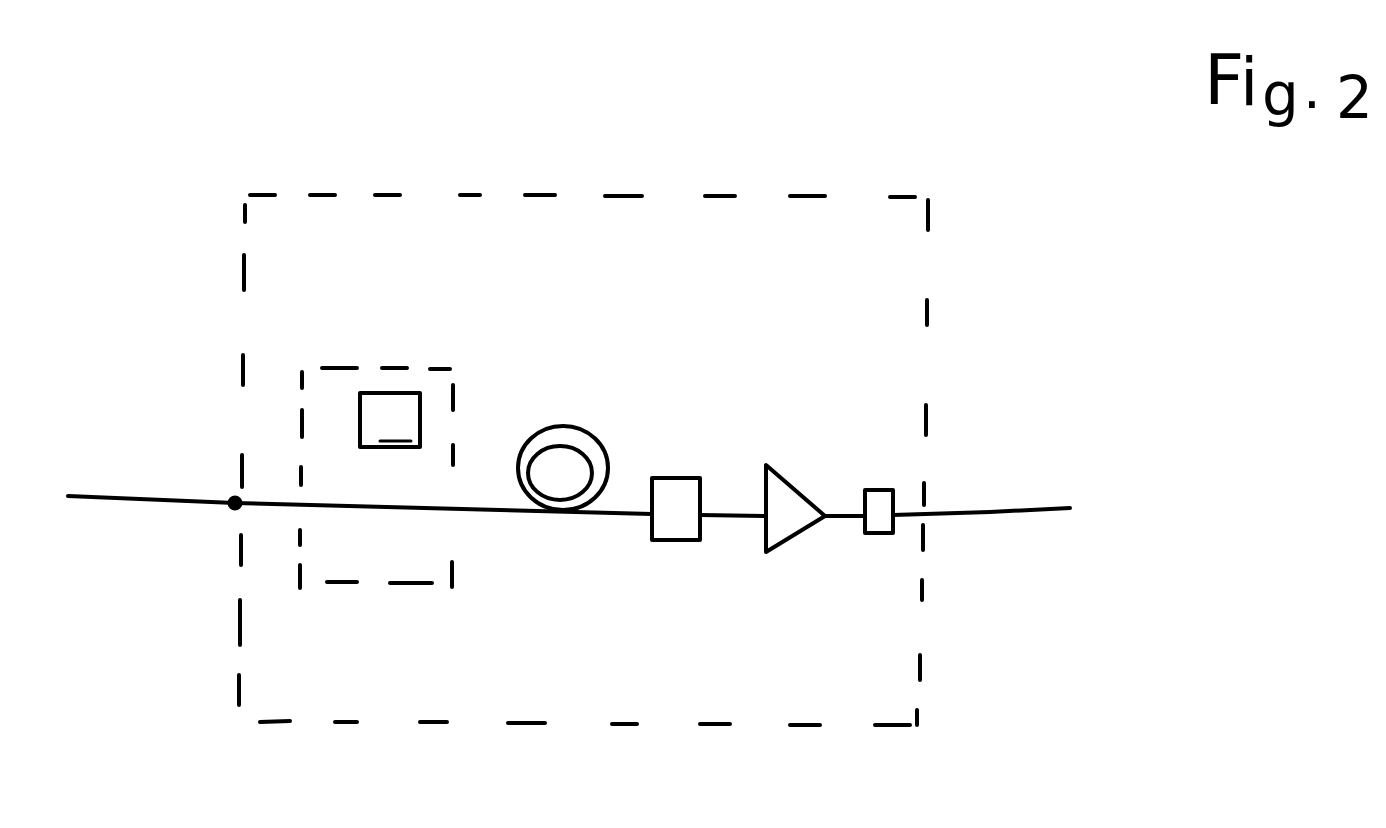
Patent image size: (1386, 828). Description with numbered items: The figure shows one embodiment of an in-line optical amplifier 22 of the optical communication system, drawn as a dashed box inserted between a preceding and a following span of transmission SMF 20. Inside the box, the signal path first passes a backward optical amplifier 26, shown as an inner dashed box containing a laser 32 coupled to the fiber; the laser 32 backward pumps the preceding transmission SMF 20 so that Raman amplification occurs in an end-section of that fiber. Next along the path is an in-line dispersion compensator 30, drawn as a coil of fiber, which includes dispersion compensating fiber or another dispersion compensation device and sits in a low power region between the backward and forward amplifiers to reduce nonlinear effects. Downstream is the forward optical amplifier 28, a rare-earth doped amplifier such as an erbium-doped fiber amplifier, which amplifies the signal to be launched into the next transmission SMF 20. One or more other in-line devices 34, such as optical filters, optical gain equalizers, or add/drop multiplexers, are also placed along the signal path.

The transmission SMF 20 is at (118, 495).
The in-line optical amplifier 22 is at (622, 195).
The backward optical amplifier 26 is at (438, 370).
The forward optical amplifier 28 is at (774, 473).
The in-line dispersion compensator 30 is at (573, 427).
The laser 32 is at (360, 503).
The in-line device 34 is at (674, 545).